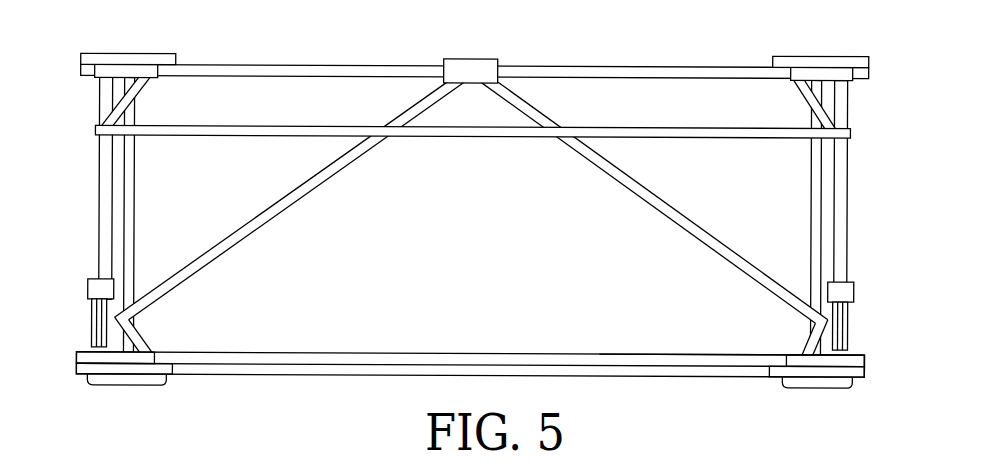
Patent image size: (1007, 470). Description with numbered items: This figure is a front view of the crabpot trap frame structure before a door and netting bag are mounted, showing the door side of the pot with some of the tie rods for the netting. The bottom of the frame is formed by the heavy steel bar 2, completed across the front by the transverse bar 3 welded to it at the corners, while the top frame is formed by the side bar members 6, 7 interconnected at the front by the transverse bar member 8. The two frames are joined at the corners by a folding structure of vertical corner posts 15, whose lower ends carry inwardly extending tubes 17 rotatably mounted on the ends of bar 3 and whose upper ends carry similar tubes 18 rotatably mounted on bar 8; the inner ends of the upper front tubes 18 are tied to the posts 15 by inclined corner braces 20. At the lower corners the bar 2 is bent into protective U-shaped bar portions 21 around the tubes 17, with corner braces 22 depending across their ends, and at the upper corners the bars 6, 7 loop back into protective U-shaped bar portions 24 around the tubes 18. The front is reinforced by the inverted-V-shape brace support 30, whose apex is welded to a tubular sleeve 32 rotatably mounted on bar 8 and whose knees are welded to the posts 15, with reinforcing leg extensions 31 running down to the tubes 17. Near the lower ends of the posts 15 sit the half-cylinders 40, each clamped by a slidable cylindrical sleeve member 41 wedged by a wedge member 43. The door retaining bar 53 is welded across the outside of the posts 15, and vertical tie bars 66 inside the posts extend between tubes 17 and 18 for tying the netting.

The heavy steel bar 2 is at (377, 370).
The transverse heavy steel bar 3 is at (870, 358).
The side bar member 6 is at (102, 53).
The side bar member 7 is at (867, 58).
The transverse bar member 8 is at (692, 60).
The corner post 15 is at (466, 182).
The steel tube 17 is at (152, 347).
The tube 18 is at (100, 82).
The inclined corner brace 20 is at (143, 93).
The U-shaped bar portion 21 is at (150, 372).
The corner brace 22 is at (142, 385).
The U-shaped bar portion 24 is at (128, 53).
The inverted-V-shape brace support 30 is at (278, 208).
The reinforcing leg extension 31 is at (140, 330).
The tubular sleeve 32 is at (468, 58).
The half-cylinder 40 is at (92, 323).
The cylindrical sleeve member 41 is at (88, 287).
The wedge member 43 is at (808, 297).
The door retaining bar 53 is at (450, 137).
The vertical tie bar 66 is at (133, 187).